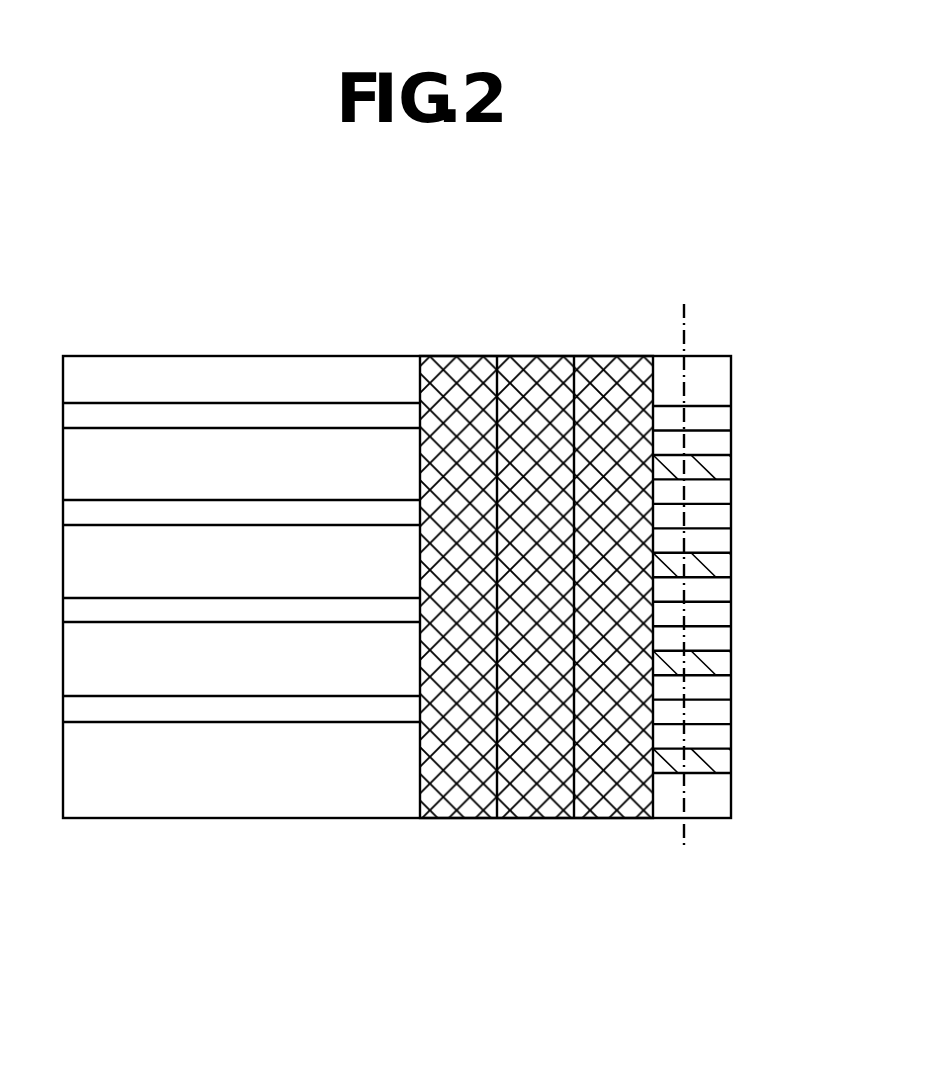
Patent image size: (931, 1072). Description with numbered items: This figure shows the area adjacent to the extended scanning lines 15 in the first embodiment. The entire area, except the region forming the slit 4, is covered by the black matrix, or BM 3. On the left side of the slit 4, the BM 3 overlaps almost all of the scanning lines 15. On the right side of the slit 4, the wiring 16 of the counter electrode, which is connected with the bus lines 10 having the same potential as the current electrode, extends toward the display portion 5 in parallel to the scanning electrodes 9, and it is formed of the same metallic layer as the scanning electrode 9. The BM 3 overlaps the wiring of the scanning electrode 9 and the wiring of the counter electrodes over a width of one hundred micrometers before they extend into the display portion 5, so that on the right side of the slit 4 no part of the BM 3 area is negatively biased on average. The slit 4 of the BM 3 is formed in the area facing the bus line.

The BM 3 is at (112, 766).
The slit 4 is at (528, 380).
The display portion 5 is at (684, 304).
The scanning electrode 9 is at (725, 418).
The bus lines 10 is at (453, 793).
The wiring line 15 is at (125, 517).
The wiring of the counter electrode 16 is at (721, 470).